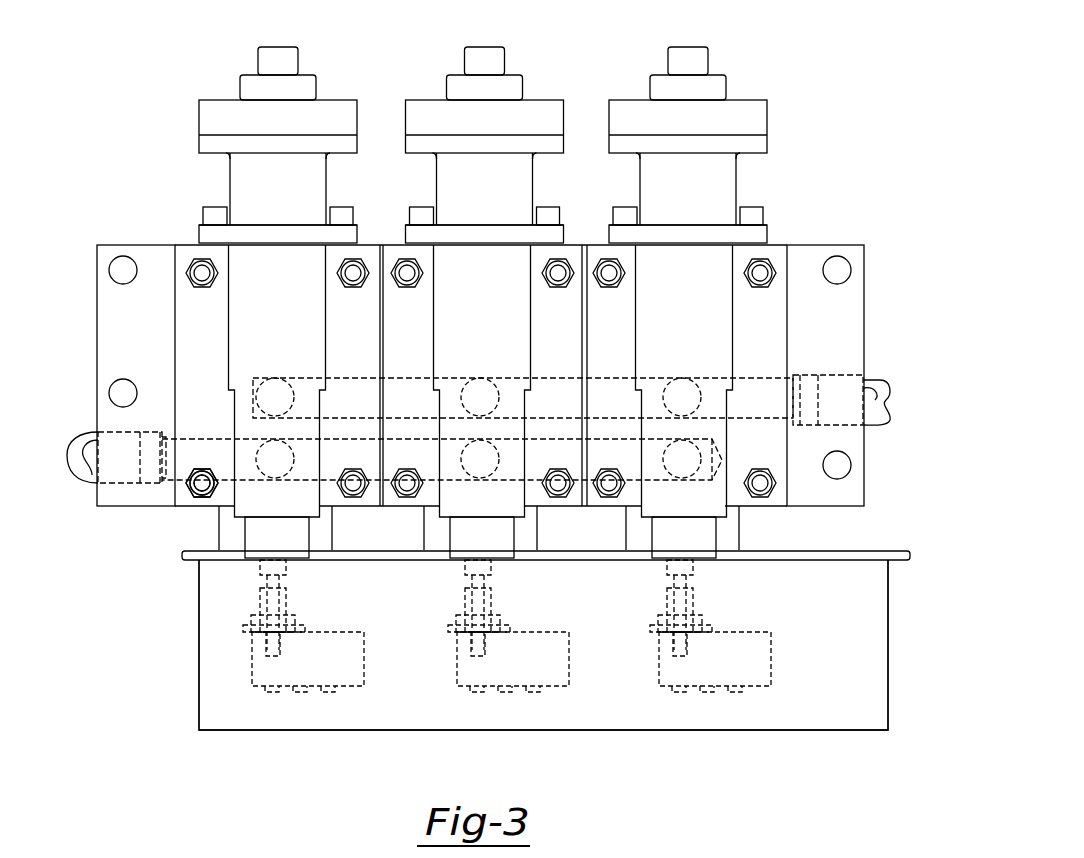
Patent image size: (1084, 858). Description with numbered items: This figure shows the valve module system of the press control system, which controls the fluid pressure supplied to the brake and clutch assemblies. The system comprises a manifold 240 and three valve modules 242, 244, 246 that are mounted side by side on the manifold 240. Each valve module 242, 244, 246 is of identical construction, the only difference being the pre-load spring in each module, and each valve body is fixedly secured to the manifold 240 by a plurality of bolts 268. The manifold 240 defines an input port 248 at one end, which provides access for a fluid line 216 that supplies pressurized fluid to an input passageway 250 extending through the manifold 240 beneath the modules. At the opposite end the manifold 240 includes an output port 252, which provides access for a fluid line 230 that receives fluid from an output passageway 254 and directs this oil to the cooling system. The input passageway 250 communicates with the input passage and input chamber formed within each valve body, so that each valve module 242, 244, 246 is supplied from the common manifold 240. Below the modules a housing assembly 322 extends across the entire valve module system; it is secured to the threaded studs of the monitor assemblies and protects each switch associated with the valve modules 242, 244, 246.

The valve module 242 is at (343, 115).
The valve module 244 is at (553, 120).
The valve module 246 is at (755, 120).
The input passageway 250 is at (200, 435).
The output passageway 254 is at (758, 390).
The manifold 240 is at (132, 498).
The bolts 268 is at (200, 485).
The input port 248 is at (116, 458).
The fluid line 216 is at (82, 478).
The output port 252 is at (842, 395).
The fluid line 230 is at (862, 395).
The housing assembly 322 is at (822, 715).